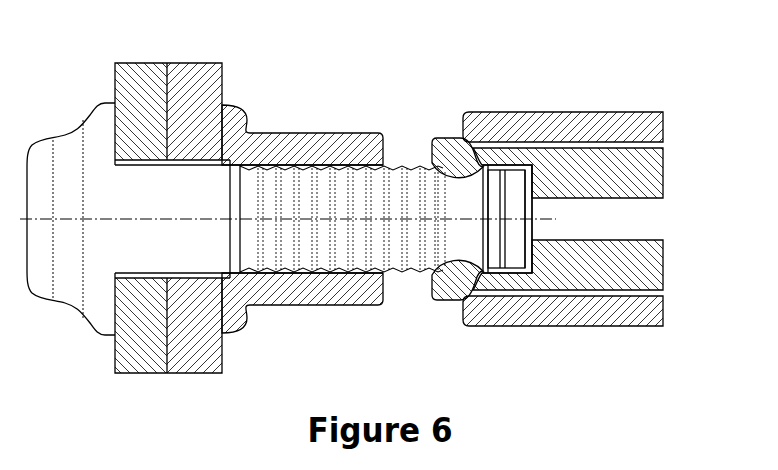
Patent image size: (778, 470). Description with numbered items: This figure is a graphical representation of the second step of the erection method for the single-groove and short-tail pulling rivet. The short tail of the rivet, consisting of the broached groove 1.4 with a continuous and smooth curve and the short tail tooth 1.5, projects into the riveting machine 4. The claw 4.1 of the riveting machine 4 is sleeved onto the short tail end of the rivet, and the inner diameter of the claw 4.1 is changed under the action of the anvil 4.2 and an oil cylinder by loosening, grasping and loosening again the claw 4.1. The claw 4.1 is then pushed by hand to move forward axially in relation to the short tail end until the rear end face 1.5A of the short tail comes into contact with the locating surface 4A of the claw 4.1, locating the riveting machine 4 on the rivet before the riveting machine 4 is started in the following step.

The riveting machine 4 is at (563, 178).
The anvil 4.2 is at (536, 116).
The claw 4.1 is at (578, 175).
The locating surface 4A is at (627, 185).
The broached groove 1.4 is at (457, 245).
The short tail tooth 1.5 is at (508, 247).
The rear end face 1.5A is at (537, 187).